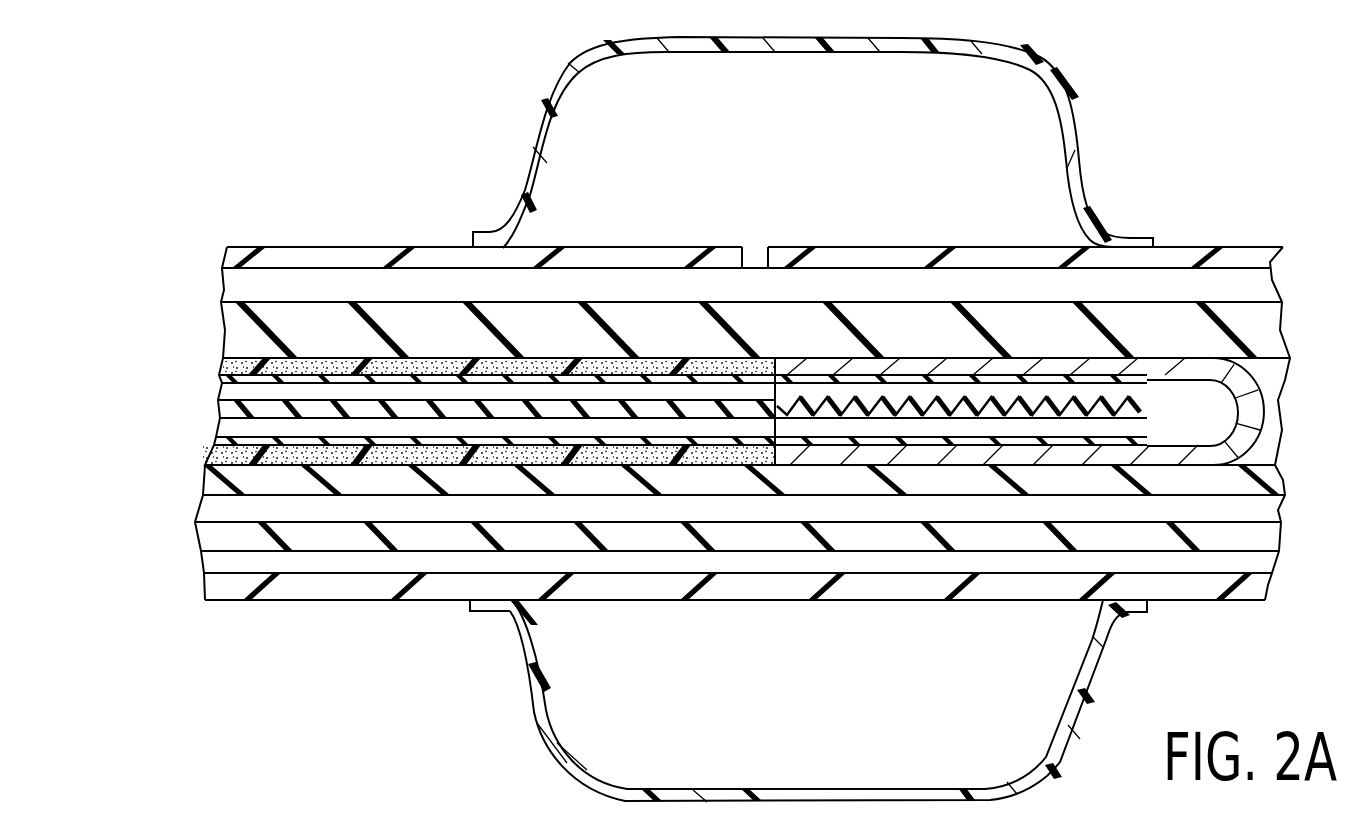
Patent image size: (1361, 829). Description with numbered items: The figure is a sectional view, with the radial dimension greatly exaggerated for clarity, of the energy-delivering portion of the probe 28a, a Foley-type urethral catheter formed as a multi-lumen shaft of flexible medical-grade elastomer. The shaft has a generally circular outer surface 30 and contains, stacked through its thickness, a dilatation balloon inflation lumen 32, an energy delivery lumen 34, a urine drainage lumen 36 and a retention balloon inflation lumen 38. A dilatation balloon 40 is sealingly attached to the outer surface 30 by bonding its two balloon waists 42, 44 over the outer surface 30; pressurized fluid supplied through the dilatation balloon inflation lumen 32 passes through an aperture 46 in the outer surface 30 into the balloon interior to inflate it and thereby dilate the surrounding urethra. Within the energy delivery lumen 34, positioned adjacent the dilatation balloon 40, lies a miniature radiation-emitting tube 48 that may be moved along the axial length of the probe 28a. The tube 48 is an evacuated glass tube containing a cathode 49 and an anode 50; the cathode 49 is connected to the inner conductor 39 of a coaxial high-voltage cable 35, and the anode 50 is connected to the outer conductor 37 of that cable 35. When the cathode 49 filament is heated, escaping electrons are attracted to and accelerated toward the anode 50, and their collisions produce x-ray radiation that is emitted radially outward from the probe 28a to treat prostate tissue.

The probe 28a is at (270, 247).
The outer surface 30 is at (418, 246).
The dilatation balloon inflation lumen 32 is at (350, 278).
The energy delivery lumen 34 is at (1272, 372).
The coaxial high-voltage cable 35 is at (213, 372).
The urine drainage lumen 36 is at (205, 507).
The outer conductor 37 is at (220, 385).
The retention balloon inflation lumen 38 is at (243, 560).
The inner conductor 39 is at (228, 402).
The dilatation balloon 40 is at (977, 36).
The balloon waist 42 is at (487, 232).
The balloon waist 44 is at (1135, 233).
The aperture 46 is at (762, 240).
The radiation-emitting tube 48 is at (1262, 395).
The cathode 49 is at (1138, 410).
The anode 50 is at (1193, 408).